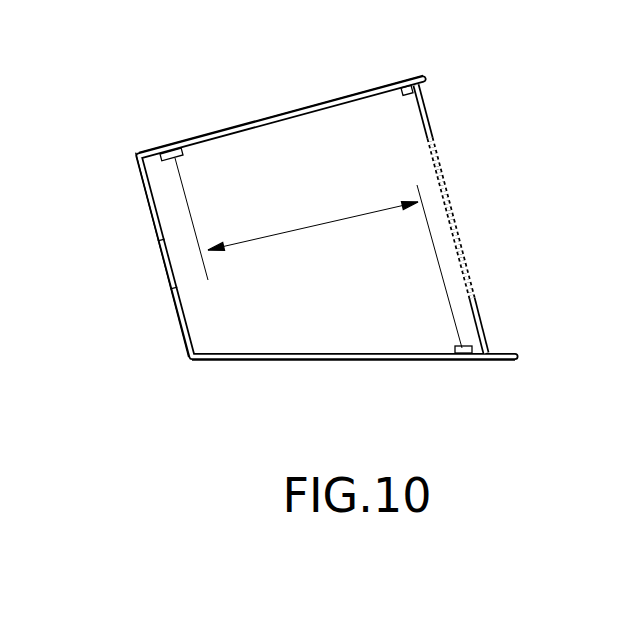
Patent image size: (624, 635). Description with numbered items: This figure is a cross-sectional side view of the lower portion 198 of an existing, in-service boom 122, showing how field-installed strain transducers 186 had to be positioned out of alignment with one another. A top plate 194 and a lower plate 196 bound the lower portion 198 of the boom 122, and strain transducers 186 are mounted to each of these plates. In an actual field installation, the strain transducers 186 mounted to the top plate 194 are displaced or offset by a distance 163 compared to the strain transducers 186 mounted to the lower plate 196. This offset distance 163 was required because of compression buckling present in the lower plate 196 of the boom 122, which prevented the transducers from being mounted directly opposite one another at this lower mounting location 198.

The boom 122 is at (133, 113).
The top plate 194 is at (332, 100).
The lower plate 196 is at (420, 360).
The lower portion 198 is at (230, 361).
The strain transducers 186 is at (163, 162).
The offset distance 163 is at (362, 212).